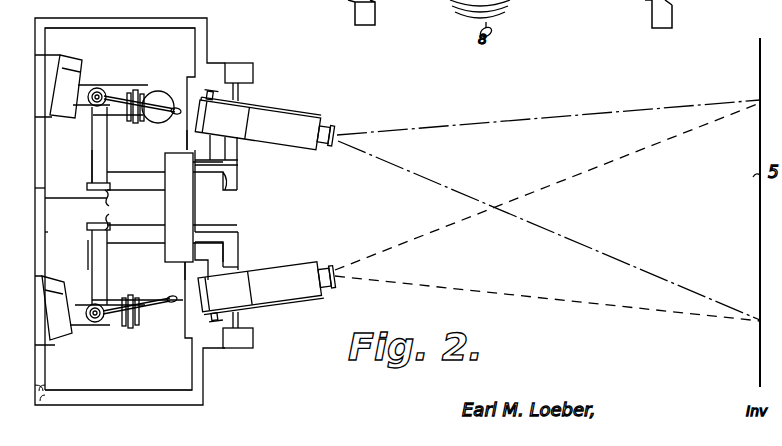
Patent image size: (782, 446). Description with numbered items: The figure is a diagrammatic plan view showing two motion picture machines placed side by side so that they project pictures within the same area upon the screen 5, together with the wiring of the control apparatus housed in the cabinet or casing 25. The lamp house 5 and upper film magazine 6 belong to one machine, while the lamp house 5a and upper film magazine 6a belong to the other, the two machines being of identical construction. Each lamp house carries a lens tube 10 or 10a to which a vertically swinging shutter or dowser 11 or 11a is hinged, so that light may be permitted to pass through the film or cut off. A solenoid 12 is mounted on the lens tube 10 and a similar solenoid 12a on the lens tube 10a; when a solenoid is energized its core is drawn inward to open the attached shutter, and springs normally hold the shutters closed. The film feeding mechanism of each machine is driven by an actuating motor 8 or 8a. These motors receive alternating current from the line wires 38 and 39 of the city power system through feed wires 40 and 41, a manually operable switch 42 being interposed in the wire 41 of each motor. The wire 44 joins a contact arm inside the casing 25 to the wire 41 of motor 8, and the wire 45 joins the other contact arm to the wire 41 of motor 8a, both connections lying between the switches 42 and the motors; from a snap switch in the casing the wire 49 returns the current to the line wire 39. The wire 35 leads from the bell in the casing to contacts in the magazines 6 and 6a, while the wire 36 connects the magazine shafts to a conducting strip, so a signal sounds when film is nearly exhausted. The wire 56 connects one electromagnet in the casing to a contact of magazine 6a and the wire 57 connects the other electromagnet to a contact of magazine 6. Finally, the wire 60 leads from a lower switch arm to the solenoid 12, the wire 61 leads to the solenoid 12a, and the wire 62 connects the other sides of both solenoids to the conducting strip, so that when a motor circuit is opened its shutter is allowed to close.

The lamp house 5 is at (66, 56).
The lamp house 5a is at (52, 342).
The upper film magazine 6 is at (288, 112).
The upper film magazine 6a is at (280, 303).
The actuating motor 8 is at (239, 63).
The actuating motor 8a is at (236, 354).
The lens tube 10 is at (94, 88).
The lens tube 10a is at (81, 337).
The shutter or dowser 11 is at (167, 92).
The shutter 11a is at (146, 320).
The solenoid 12 is at (125, 90).
The solenoid 12a is at (116, 320).
The cabinet or casing 25 is at (196, 218).
The wire 35 is at (240, 160).
The wire 36 is at (224, 190).
The line wire 38 is at (48, 188).
The line wire 39 is at (47, 232).
The feed wire 40 is at (190, 20).
The feed wire 41 is at (133, 18).
The manually operable switch 42 is at (162, 27).
The wire 44 is at (185, 138).
The wire 45 is at (178, 276).
The wire 49 is at (142, 201).
The wire 56 is at (235, 263).
The wire 57 is at (240, 176).
The wire 60 is at (88, 170).
The wire 61 is at (84, 254).
The wire 62 is at (140, 172).